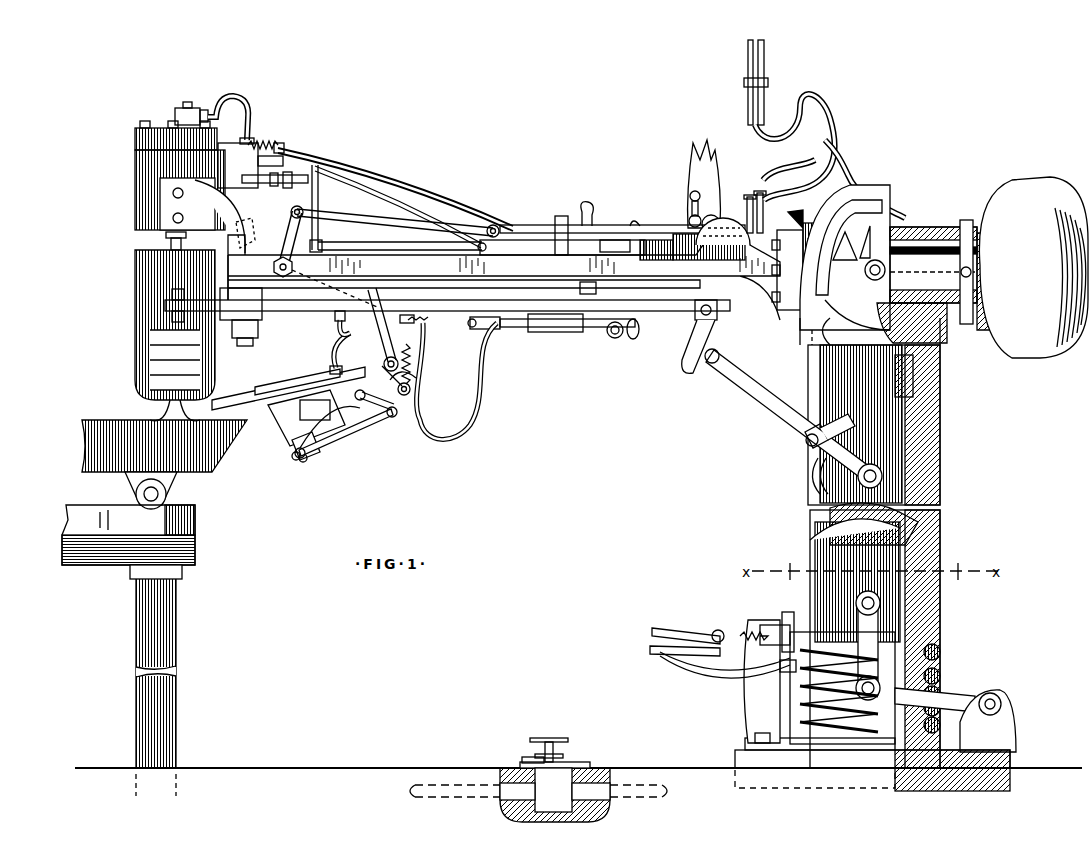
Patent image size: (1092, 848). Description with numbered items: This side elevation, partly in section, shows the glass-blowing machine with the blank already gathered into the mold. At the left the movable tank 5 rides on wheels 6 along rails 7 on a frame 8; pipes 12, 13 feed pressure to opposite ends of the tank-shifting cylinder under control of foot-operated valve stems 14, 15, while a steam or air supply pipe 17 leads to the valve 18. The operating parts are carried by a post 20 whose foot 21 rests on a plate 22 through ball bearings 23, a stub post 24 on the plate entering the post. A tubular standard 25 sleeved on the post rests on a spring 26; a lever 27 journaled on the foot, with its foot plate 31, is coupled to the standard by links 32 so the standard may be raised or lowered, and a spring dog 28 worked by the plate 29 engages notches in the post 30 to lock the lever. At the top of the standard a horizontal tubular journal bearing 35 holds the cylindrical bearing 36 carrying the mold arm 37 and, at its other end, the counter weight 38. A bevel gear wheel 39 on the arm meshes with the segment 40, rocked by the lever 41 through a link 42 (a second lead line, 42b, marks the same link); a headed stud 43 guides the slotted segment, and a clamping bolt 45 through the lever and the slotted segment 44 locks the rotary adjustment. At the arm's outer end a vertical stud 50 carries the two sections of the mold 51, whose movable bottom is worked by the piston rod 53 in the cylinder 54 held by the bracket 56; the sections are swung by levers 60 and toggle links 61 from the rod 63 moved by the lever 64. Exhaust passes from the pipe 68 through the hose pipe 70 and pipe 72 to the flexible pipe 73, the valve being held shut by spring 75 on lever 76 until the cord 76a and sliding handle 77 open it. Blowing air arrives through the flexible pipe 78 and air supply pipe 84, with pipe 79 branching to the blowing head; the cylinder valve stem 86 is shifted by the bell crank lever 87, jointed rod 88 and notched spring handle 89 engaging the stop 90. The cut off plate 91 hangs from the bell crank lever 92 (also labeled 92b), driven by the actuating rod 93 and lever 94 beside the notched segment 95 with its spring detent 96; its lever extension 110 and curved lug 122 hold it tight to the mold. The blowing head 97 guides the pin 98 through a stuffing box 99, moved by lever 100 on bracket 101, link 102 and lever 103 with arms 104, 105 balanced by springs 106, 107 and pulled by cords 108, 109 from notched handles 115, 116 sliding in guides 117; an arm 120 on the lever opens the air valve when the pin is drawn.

The movable tank 5 is at (210, 447).
The wheels 6 is at (135, 496).
The rails 7 is at (90, 517).
The frame 8 is at (160, 608).
The pipe 12 is at (480, 785).
The pipe 13 is at (425, 792).
The valve stem 14 is at (531, 755).
The valve stem 15 is at (549, 738).
The steam or air supply pipe 17 is at (602, 768).
The valve 18 is at (555, 790).
The post 20 is at (922, 520).
The foot 21 is at (1012, 758).
The plate 22 is at (1000, 784).
The ball bearings 23 is at (1005, 752).
The stub post 24 is at (905, 724).
The tubular standard 25 is at (943, 420).
The spring 26 is at (937, 672).
The lever 27 is at (738, 668).
The spring dog 28 is at (757, 632).
The plate 29 is at (677, 630).
The post 30 is at (760, 706).
The foot plate 31 is at (655, 650).
The links 32 is at (872, 637).
The horizontal tubular journal bearing 35 is at (926, 226).
The cylindrical bearing 36 is at (935, 256).
The mold arm 37 is at (473, 270).
The counter weight 38 is at (1033, 267).
The bevel gear wheel 39 is at (797, 216).
The segment 40 is at (886, 187).
The lever 41 is at (766, 398).
The link 42 is at (818, 236).
The pivot 42b is at (815, 372).
The headed stud 43 is at (806, 273).
The slotted segment 44 is at (816, 476).
The clamping bolt 45 is at (810, 446).
The vertical stud 50 is at (244, 337).
The mold 51 is at (143, 340).
The piston rod 53 is at (168, 238).
The cylinder 54 is at (150, 185).
The bracket 56 is at (228, 222).
The levers 60 is at (172, 303).
The toggle levers 61 is at (474, 322).
The rod 63 is at (668, 313).
The lever 64 is at (686, 366).
The pipe 68 is at (178, 110).
The hose pipe 70 is at (230, 100).
The pipe 72 is at (248, 222).
The flexible pipe 73 is at (806, 96).
The spring 75 is at (258, 145).
The lever 76 is at (279, 146).
The cord 76a is at (443, 193).
The sliding handle 77 is at (585, 205).
The flexible pipe 78 is at (828, 136).
The air supply pipe 79 is at (592, 288).
The air supply pipe 84 is at (400, 210).
The valve stem 86 is at (226, 240).
The bell crank lever 87 is at (262, 212).
The jointed rod 88 is at (300, 248).
The notched spring handle 89 is at (636, 224).
The stop 90 is at (626, 248).
The cut off plate 91 is at (250, 395).
The bell crank lever 92 is at (320, 240).
The hose 92b is at (340, 333).
The bar 93 is at (514, 230).
The lever 94 is at (704, 145).
The notched segment 95 is at (724, 232).
The spring detent 96 is at (690, 220).
The blowing head 97 is at (287, 419).
The pin 98 is at (304, 462).
The stuffing box 99 is at (330, 442).
The lever 100 is at (302, 454).
The bracket 101 is at (350, 438).
The link 102 is at (410, 400).
The lever 103 is at (410, 390).
The actuating arm 104 is at (395, 378).
The actuating arm 105 is at (362, 352).
The spring 106 is at (398, 362).
The spring 107 is at (414, 322).
The cord 108 is at (482, 378).
The cord 109 is at (498, 361).
The lever extension 110 is at (402, 350).
The notched handle 115 is at (633, 340).
The notched handle 116 is at (612, 338).
The guides 117 is at (572, 332).
The arm 120 is at (380, 415).
The curved lug 122 is at (300, 380).